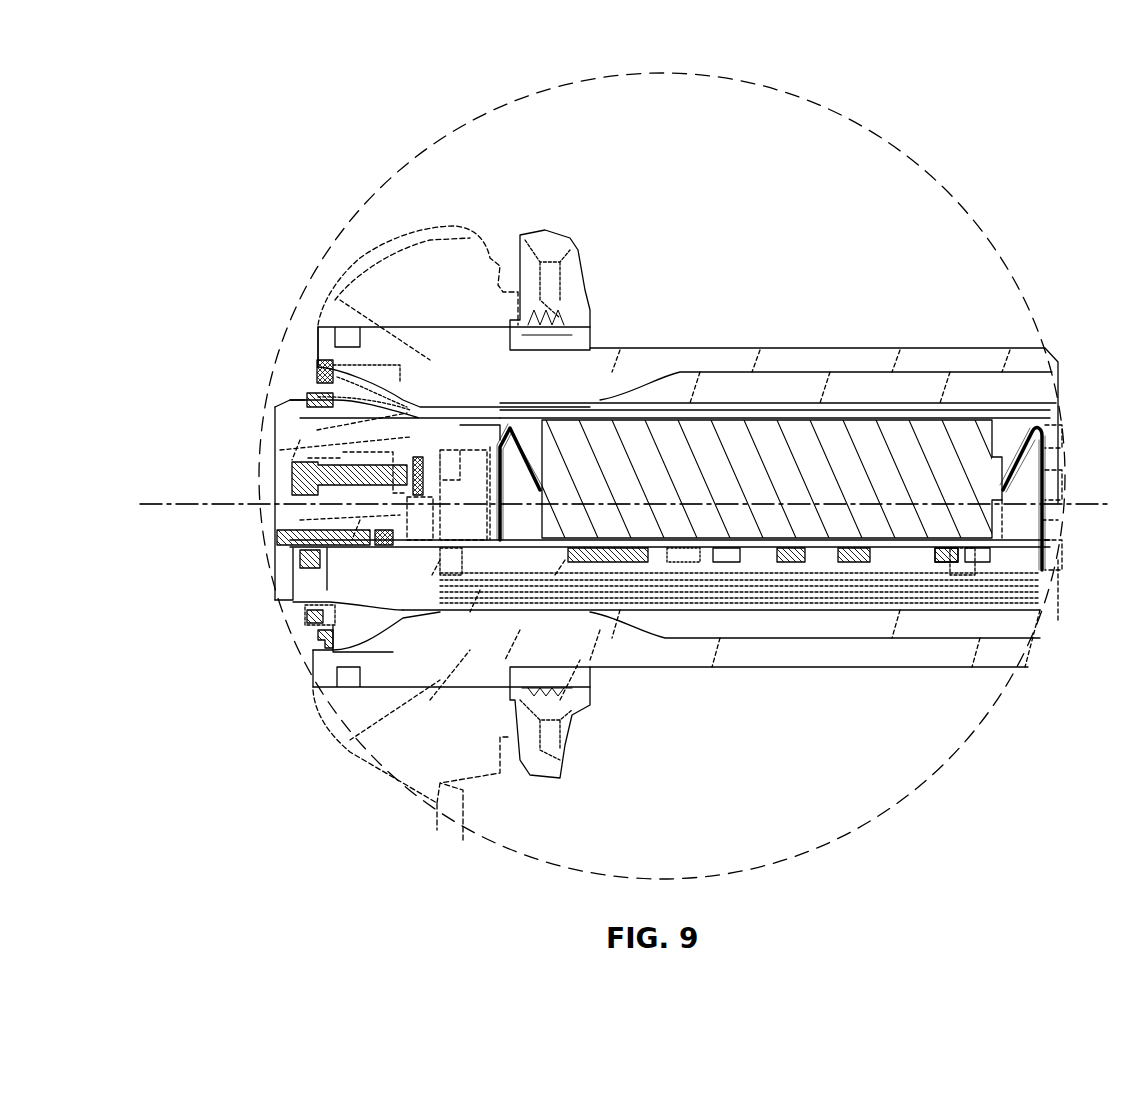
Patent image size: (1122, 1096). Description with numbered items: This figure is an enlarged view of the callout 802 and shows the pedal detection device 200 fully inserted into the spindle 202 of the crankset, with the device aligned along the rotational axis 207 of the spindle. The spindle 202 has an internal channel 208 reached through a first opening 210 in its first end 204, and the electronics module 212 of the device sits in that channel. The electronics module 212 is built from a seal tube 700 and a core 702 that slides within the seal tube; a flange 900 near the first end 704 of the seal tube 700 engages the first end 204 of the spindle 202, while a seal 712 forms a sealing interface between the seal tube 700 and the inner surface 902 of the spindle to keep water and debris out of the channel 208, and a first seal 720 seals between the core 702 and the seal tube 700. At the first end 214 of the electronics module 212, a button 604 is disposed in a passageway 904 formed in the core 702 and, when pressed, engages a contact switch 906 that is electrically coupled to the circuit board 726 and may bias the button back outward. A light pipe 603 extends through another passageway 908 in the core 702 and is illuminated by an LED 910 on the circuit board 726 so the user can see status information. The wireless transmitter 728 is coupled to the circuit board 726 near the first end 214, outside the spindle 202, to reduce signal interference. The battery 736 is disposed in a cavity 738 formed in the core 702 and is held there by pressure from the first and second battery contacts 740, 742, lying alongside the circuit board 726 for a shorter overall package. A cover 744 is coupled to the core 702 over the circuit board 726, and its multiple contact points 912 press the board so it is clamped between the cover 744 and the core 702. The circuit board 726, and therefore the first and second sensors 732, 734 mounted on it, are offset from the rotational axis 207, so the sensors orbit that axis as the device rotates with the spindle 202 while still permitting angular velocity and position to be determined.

The pedal detection device 200 is at (200, 284).
The spindle 202 is at (678, 362).
The first end 204 is at (318, 350).
The rotational axis 207 is at (170, 503).
The channel 208 is at (728, 378).
The first opening 210 is at (315, 658).
The electronics module 212 is at (843, 378).
The first end 214 is at (275, 598).
The light pipe 603 is at (278, 536).
The button 604 is at (300, 482).
The seal tube 700 is at (778, 412).
The core 702 is at (420, 468).
The first end 704 is at (292, 384).
The seal 712 is at (318, 376).
The first seal 720 is at (305, 402).
The circuit board 726 is at (360, 543).
The wireless transmitter 728 is at (300, 565).
The first sensor 732 is at (790, 562).
The second sensor 734 is at (852, 562).
The battery 736 is at (920, 475).
The cavity 738 is at (1032, 527).
The first battery contact 740 is at (515, 430).
The second battery contact 742 is at (1035, 430).
The cover 744 is at (722, 585).
The callout 802 is at (528, 86).
The flange 900 is at (315, 370).
The inner surface 902 is at (393, 383).
The passageway 904 is at (322, 458).
The contact switch 906 is at (465, 430).
The passageway 908 is at (282, 548).
The LED 910 is at (385, 537).
The contact points 912 is at (445, 562).